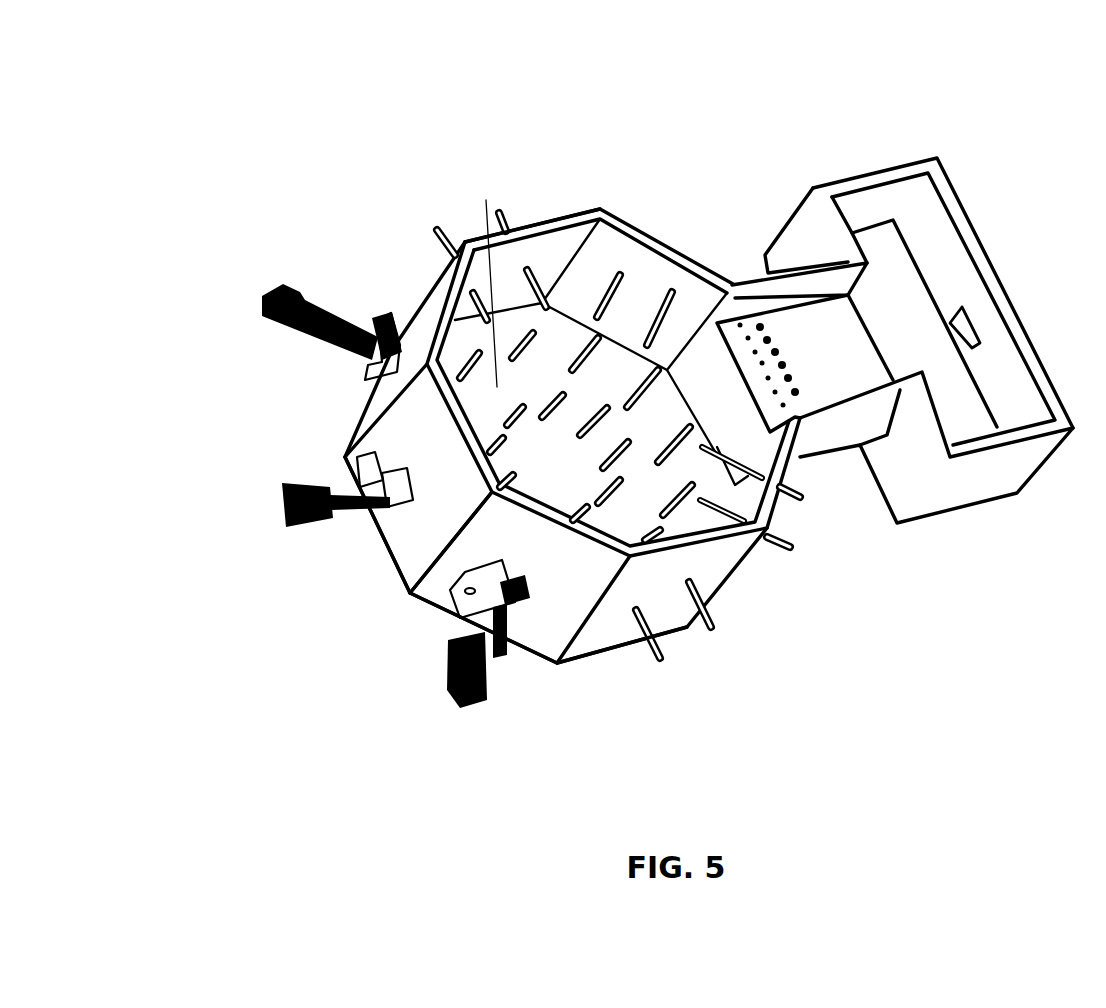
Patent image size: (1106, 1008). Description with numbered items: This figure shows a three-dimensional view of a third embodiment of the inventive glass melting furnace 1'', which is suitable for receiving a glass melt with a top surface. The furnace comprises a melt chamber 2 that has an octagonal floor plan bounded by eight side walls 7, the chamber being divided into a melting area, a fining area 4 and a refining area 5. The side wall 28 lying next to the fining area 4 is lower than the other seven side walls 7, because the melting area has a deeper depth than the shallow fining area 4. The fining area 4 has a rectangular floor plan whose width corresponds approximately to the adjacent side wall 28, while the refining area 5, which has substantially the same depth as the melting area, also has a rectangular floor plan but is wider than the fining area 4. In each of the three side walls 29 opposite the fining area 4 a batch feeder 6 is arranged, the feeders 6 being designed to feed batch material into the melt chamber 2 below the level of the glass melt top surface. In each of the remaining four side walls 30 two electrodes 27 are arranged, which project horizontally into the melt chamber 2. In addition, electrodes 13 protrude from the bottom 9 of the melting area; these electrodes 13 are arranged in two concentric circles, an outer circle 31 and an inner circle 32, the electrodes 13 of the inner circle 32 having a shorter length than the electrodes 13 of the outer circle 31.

The furnace 1'' is at (977, 714).
The melt chamber 2 is at (658, 206).
The fining area 4 is at (800, 318).
The refining area 5 is at (947, 248).
The batch feeder 6 is at (305, 290).
The side wall 7 is at (420, 535).
The bottom 9 is at (453, 225).
The electrode 13 is at (600, 502).
The electrode 27 is at (500, 215).
The side wall 28 is at (720, 362).
The side wall 29 is at (380, 387).
The side wall 30 is at (573, 345).
The outer circle 31 is at (560, 227).
The inner circle 32 is at (495, 417).